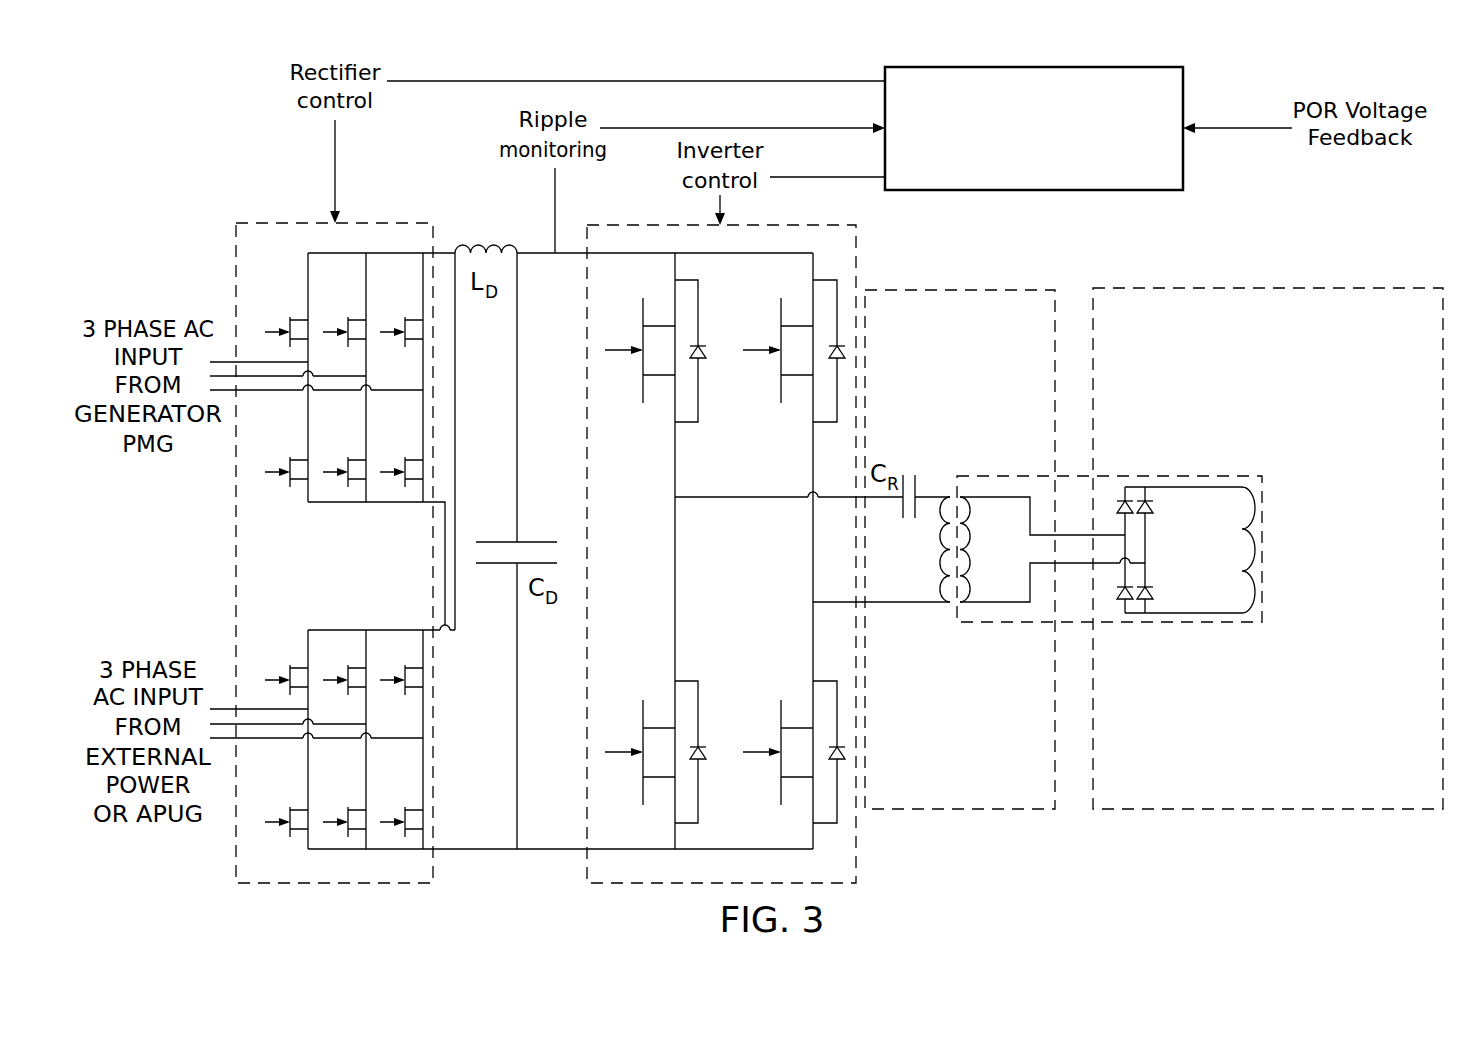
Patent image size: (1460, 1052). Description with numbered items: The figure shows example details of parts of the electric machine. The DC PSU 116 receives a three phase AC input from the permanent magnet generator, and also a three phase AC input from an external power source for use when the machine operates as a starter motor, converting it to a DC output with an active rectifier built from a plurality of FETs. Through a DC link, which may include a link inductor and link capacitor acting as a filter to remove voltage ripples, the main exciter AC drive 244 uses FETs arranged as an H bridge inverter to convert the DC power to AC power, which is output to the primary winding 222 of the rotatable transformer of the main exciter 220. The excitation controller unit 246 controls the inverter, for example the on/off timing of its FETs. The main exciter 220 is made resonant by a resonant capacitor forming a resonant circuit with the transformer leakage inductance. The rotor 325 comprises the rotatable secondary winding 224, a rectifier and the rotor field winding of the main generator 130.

The DC PSU 116 is at (236, 858).
The main exciter AC drive 244 is at (856, 862).
The excitation controller unit 246 is at (1034, 128).
The primary winding 222 is at (940, 495).
The rotatable secondary winding 224 is at (980, 495).
The main exciter 220 is at (1005, 585).
The rotor 325 is at (1170, 473).
The main generator 130 is at (1200, 584).